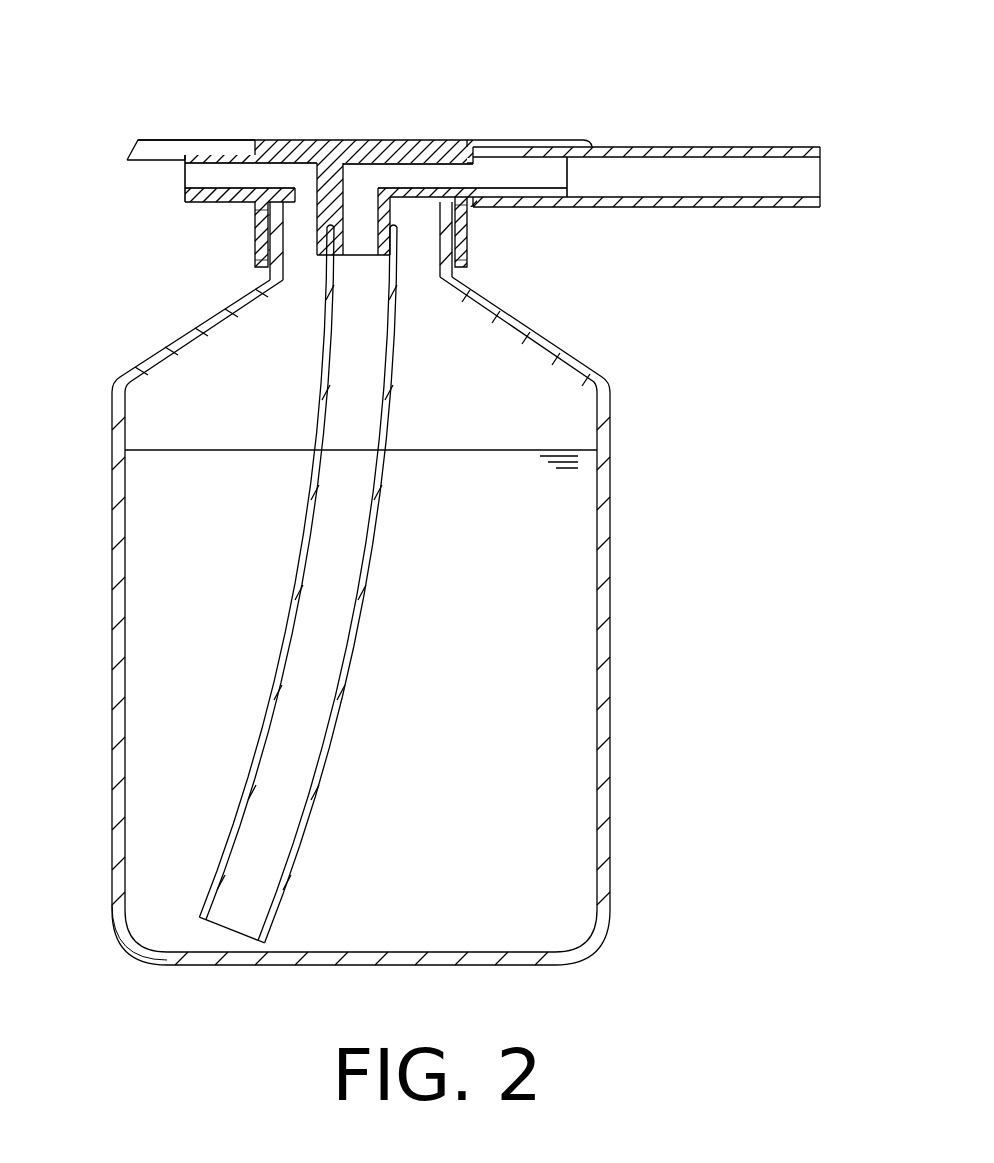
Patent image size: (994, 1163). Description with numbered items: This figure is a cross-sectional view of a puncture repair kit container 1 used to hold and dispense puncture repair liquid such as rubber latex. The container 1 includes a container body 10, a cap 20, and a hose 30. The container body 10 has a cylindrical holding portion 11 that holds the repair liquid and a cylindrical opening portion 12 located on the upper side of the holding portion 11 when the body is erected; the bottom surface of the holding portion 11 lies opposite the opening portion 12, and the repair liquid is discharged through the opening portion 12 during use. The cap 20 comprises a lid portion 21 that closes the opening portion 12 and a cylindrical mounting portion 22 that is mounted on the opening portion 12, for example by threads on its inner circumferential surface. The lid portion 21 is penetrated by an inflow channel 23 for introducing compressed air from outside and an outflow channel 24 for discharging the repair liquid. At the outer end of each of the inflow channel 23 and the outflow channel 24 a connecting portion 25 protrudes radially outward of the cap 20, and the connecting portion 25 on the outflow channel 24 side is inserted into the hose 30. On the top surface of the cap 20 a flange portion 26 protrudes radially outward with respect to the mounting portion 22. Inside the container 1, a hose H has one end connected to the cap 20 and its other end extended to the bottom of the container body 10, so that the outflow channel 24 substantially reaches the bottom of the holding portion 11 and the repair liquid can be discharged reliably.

The puncture repair kit container 1 is at (562, 106).
The container body 10 is at (606, 388).
The holding portion 11 is at (612, 500).
The opening portion 12 is at (286, 272).
The cap 20 is at (469, 137).
The lid portion 21 is at (272, 197).
The mounting portion 22 is at (262, 238).
The inflow channel 23 is at (278, 178).
The outflow channel 24 is at (417, 178).
The connecting portion 25 is at (185, 178).
The flange portion 26 is at (148, 150).
The hose 30 is at (658, 146).
The hose H is at (320, 415).